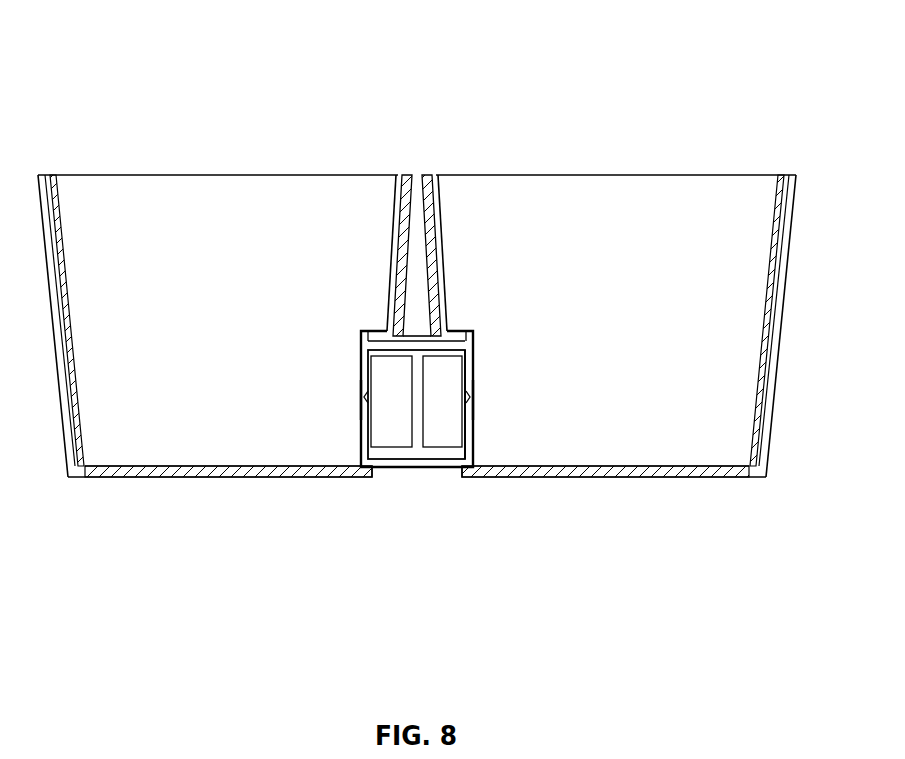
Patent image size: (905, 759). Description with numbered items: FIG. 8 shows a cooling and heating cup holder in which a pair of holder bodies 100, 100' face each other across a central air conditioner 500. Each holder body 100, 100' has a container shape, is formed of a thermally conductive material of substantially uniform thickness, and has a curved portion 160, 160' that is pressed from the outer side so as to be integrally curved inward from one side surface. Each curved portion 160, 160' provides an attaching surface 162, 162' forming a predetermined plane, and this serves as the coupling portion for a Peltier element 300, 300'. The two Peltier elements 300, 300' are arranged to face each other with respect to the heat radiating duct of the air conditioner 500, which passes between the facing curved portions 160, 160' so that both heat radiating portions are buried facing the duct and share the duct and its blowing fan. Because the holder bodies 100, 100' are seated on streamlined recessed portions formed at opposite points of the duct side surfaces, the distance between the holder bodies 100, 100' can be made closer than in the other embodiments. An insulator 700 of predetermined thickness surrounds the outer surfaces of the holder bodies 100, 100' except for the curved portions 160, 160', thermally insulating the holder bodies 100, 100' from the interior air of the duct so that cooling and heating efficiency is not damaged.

The holder body 100 is at (225, 255).
The holder body 100' is at (611, 254).
The insulator 700 is at (117, 474).
The air conditioner 500 is at (412, 340).
The curved portion 160 is at (287, 465).
The curved portion 160' is at (549, 462).
The attaching surface 162 is at (324, 278).
The attaching surface 162' is at (553, 277).
The Peltier element 300 is at (346, 257).
The Peltier element 300' is at (495, 256).